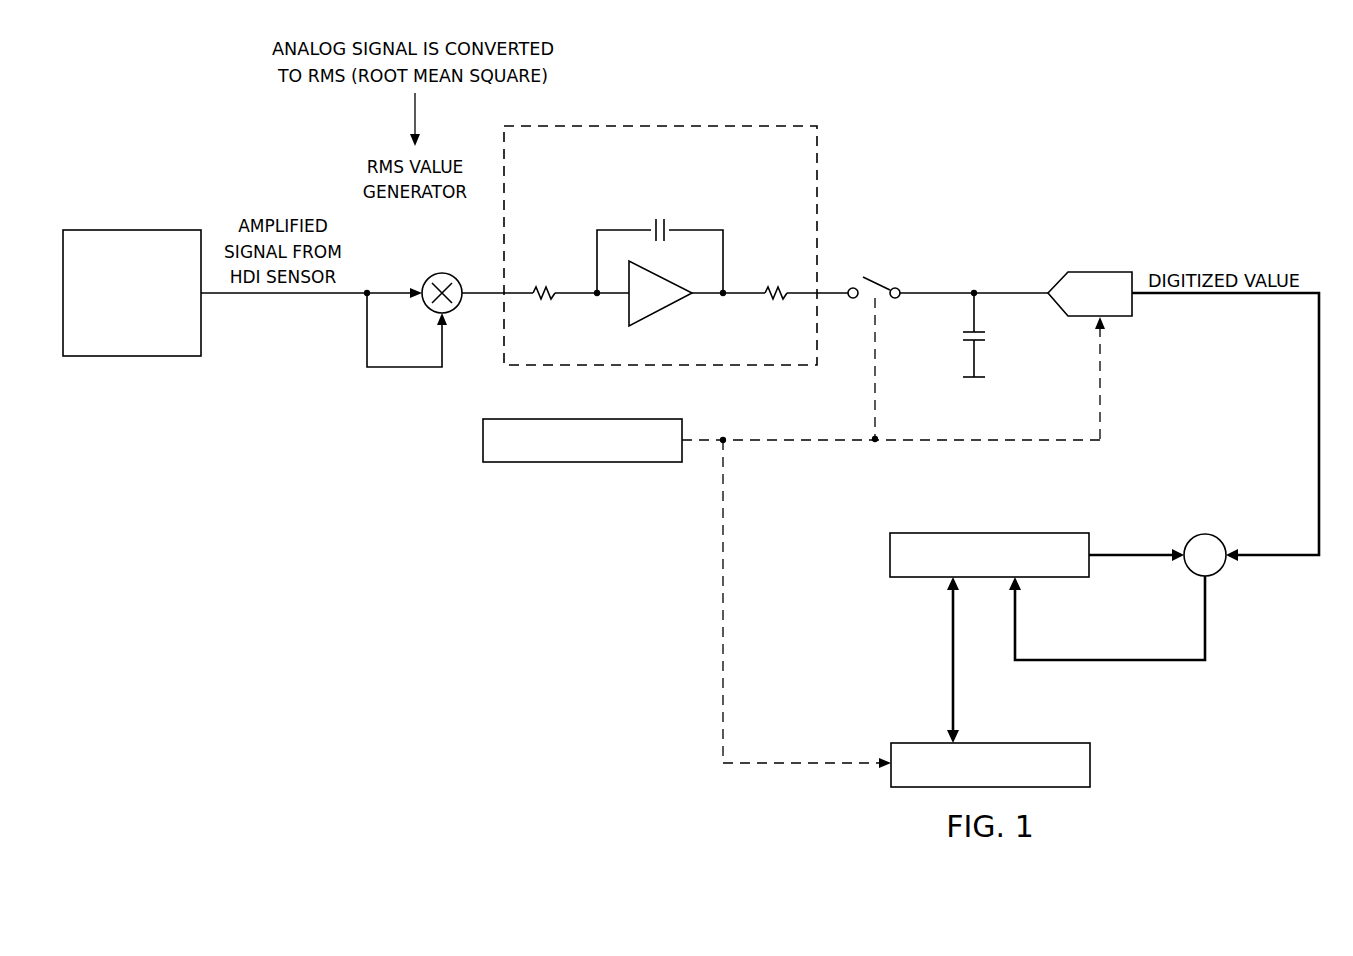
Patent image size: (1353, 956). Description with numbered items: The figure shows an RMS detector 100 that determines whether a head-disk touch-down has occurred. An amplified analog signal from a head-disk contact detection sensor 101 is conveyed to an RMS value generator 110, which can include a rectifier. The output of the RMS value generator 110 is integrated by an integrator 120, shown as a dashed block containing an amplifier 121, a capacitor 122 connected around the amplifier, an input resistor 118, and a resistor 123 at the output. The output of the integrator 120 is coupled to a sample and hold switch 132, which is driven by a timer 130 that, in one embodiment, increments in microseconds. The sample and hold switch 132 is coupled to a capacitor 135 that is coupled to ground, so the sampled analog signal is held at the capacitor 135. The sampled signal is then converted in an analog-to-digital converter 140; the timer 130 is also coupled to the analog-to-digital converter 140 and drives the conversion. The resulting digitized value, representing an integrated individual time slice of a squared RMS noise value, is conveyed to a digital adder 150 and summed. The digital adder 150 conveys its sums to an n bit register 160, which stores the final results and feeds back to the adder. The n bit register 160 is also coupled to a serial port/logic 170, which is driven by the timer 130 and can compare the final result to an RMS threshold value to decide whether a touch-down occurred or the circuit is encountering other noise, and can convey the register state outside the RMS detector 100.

The RMS detector 100 is at (422, 620).
The head-disk contact detection sensor 101 is at (128, 229).
The RMS value generator 110 is at (430, 279).
The input resistor 118 is at (543, 287).
The integrator 120 is at (742, 118).
The amplifier 121 is at (665, 308).
The capacitor 122 is at (661, 220).
The resistor 123 is at (780, 287).
The timer 130 is at (581, 464).
The sample and hold switch 132 is at (880, 276).
The capacitor 135 is at (986, 335).
The analog-to-digital converter 140 is at (1105, 270).
The digital adder 150 is at (1221, 573).
The n bit register 160 is at (1056, 579).
The serial port/logic 170 is at (1091, 768).